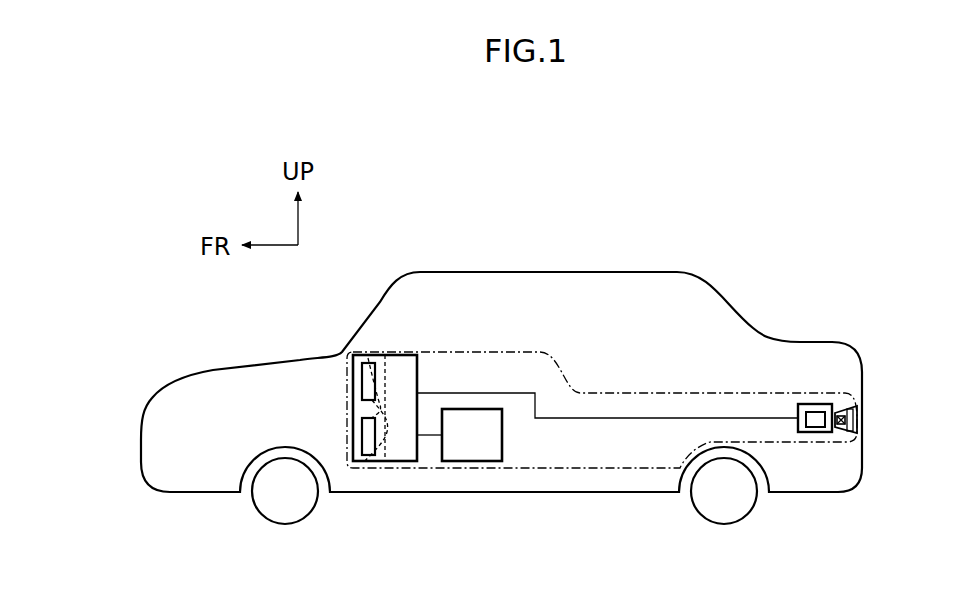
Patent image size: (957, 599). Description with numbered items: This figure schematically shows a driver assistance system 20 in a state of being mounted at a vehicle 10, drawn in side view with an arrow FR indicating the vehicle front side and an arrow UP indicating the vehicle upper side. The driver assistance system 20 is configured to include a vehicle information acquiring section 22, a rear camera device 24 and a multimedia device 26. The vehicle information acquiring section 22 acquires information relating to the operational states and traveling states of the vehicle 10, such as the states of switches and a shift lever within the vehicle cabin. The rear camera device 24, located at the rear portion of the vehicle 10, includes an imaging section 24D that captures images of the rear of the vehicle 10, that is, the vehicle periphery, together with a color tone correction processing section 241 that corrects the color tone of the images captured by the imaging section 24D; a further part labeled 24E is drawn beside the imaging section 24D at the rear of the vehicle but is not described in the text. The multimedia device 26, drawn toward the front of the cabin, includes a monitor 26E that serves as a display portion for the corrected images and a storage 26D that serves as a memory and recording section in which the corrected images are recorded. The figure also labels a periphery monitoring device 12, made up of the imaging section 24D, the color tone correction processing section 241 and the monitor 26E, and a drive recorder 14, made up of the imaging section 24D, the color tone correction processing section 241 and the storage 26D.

The vehicle 10 is at (698, 219).
The periphery monitoring device 12 is at (343, 391).
The drive recorder 14 is at (343, 427).
The driver assistance system 20 is at (719, 353).
The vehicle information acquiring section 22 is at (466, 463).
The rear camera device 24 is at (808, 401).
The imaging section 24D is at (850, 408).
The rear emitter 24E is at (845, 432).
The color tone correction processing section 241 is at (812, 433).
The multimedia device 26 is at (404, 464).
The storage 26D is at (363, 457).
The monitor 26E is at (368, 356).